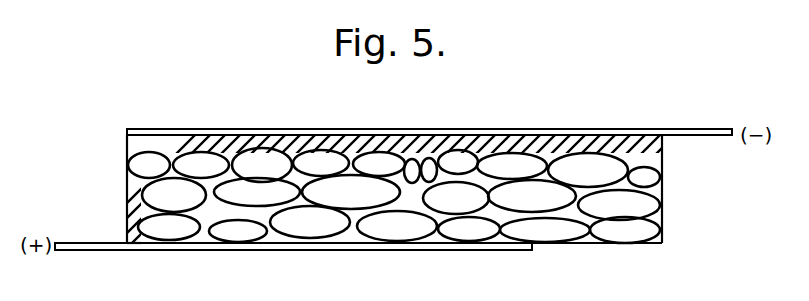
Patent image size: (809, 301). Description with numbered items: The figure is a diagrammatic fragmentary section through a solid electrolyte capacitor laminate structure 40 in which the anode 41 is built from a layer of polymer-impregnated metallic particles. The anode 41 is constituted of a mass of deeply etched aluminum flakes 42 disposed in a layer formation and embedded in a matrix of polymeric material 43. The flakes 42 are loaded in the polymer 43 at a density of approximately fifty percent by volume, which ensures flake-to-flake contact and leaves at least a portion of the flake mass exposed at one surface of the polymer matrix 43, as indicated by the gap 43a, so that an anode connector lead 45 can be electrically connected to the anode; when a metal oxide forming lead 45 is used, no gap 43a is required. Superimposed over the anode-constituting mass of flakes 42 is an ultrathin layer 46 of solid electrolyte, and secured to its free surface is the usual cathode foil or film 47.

The capacitor laminate structure 40 is at (628, 86).
The anode 41 is at (668, 157).
The deeply etched aluminum flakes 42 is at (555, 229).
The polymeric material 43 is at (128, 190).
The gap 43a is at (134, 243).
The anode connector lead 45 is at (435, 246).
The ultrathin layer of solid electrolyte 46 is at (293, 129).
The cathode foil or film 47 is at (489, 129).